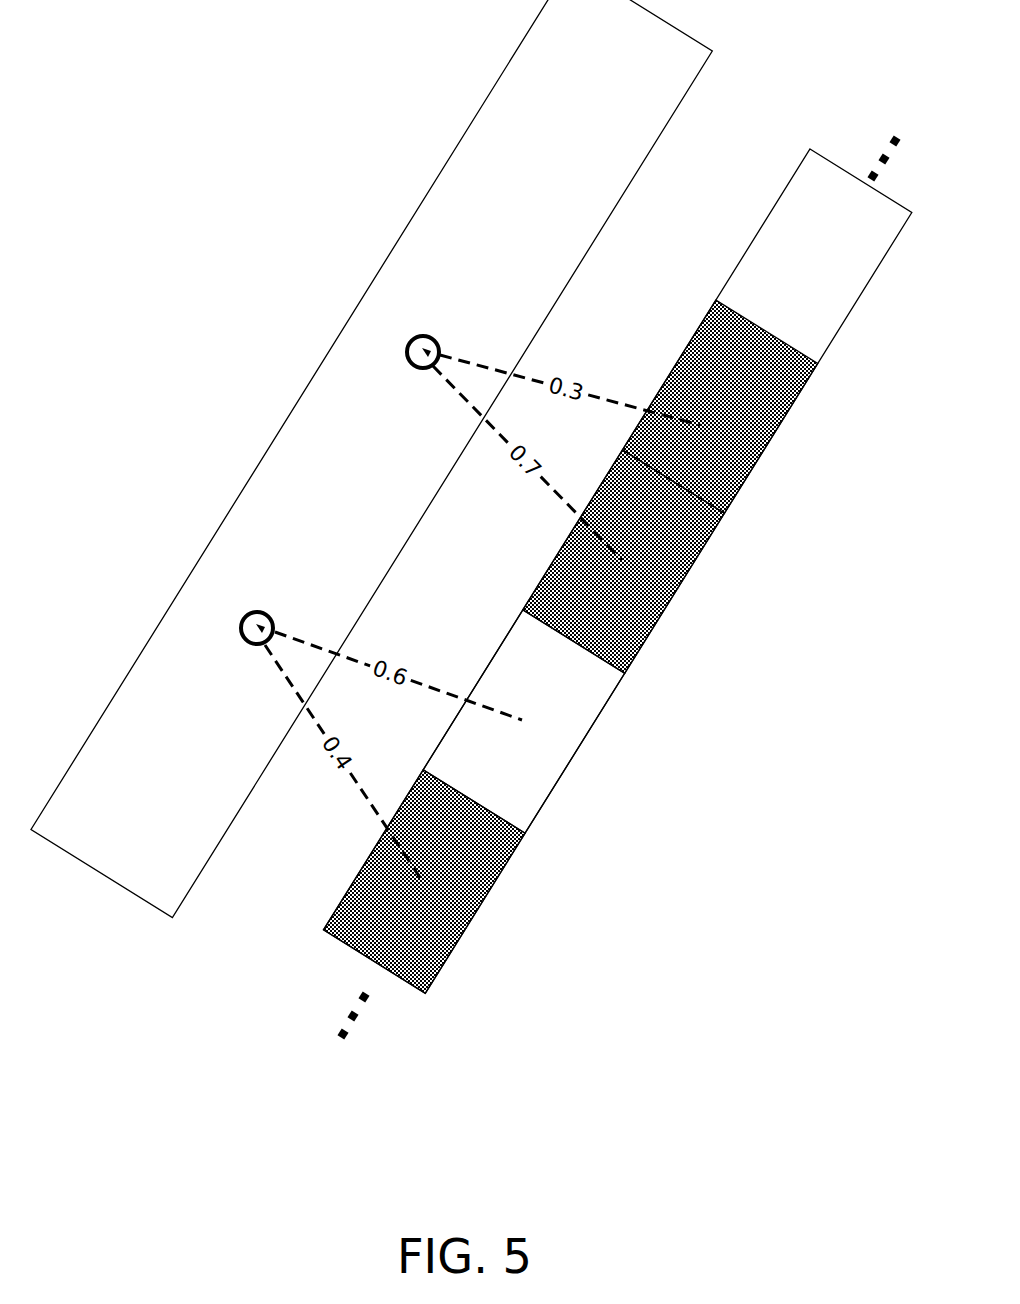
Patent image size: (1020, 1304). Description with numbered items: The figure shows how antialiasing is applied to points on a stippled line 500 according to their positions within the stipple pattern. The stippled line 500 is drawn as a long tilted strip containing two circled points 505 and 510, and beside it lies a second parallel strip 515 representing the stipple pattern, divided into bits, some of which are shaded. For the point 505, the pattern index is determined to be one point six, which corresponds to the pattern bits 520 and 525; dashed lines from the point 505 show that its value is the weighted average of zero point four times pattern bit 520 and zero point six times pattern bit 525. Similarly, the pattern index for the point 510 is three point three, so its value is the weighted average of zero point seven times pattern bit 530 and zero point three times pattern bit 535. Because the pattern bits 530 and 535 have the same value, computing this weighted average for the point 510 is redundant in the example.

The stippled line 500 is at (490, 93).
The point 505 is at (240, 630).
The point 510 is at (406, 347).
The second media segment 515 is at (323, 930).
The pattern bit 520 is at (460, 882).
The pattern bit 525 is at (522, 720).
The pattern bit 530 is at (653, 561).
The pattern bit 535 is at (761, 406).